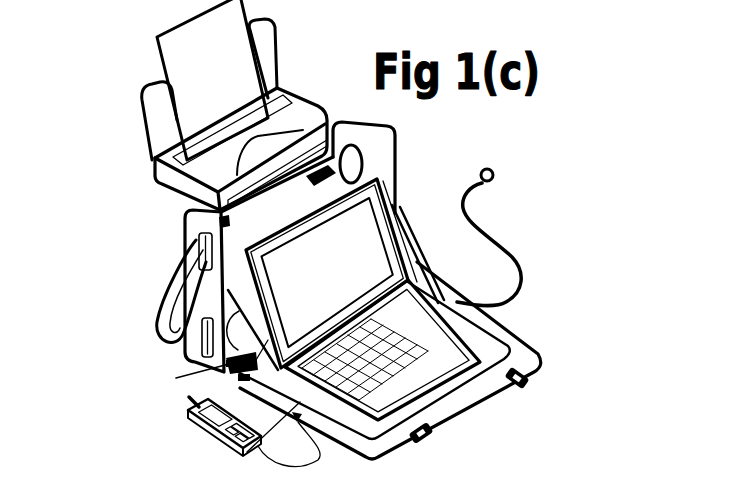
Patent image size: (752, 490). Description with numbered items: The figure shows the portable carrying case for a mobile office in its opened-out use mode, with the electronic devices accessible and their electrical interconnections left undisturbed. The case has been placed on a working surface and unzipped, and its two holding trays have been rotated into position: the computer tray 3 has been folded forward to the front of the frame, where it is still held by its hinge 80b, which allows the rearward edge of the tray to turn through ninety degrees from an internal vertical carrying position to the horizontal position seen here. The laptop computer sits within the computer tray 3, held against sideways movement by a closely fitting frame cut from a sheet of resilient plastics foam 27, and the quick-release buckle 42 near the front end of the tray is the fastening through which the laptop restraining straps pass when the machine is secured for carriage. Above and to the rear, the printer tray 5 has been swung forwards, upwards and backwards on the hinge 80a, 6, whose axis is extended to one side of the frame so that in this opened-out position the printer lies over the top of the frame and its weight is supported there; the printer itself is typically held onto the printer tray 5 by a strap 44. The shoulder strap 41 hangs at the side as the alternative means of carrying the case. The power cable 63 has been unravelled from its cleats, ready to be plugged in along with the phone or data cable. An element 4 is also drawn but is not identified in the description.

The computer tray 3 is at (243, 466).
The cable 4 is at (176, 378).
The printer tray 5 is at (168, 192).
The hinge 6 is at (242, 223).
The sheet of resilient plastics foam 27 is at (487, 373).
The shoulder strap 41 is at (163, 306).
The quick-release buckle 42 is at (522, 394).
The strap 44 is at (288, 76).
The power cable 63 is at (499, 186).
The hinge 80a is at (216, 224).
The hinge 80b is at (240, 378).